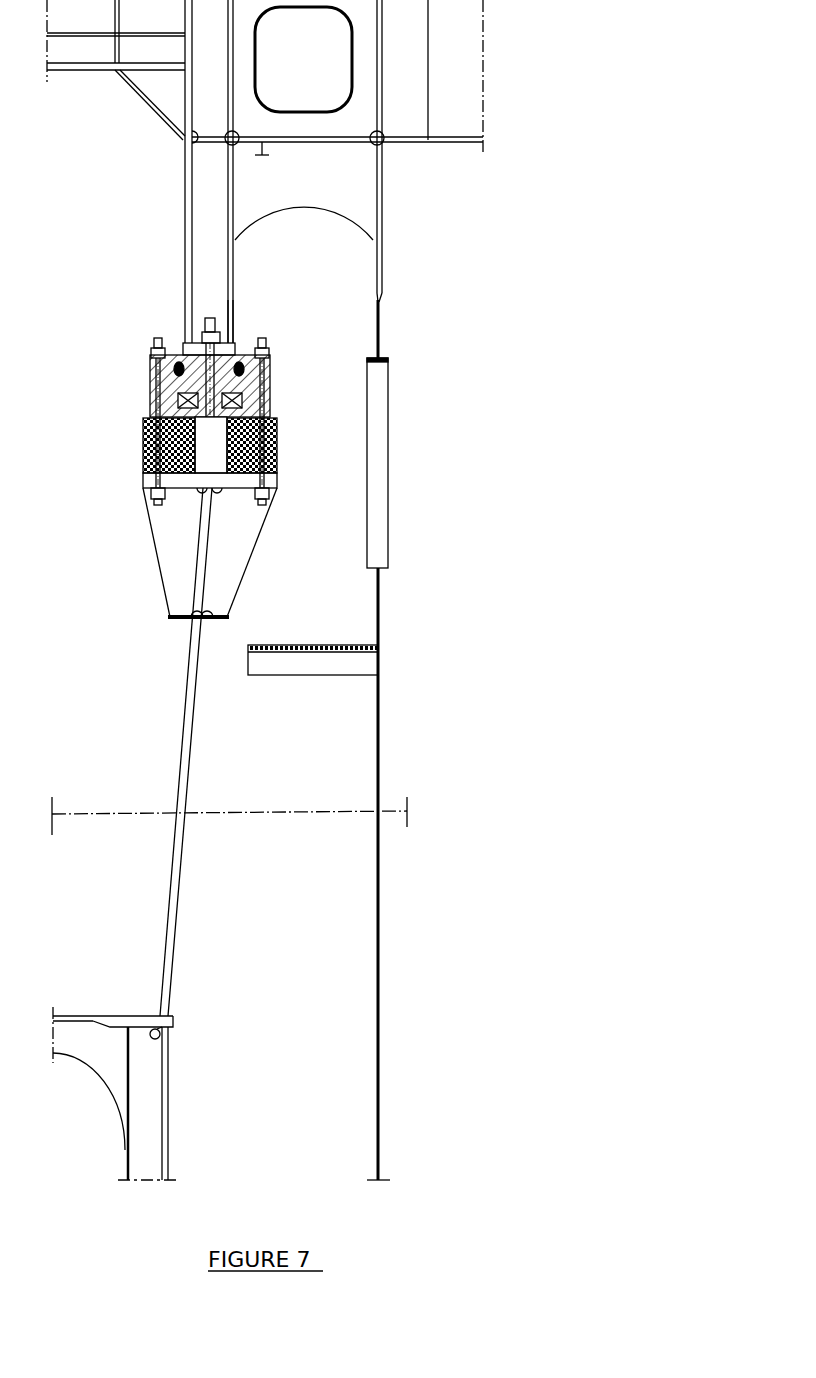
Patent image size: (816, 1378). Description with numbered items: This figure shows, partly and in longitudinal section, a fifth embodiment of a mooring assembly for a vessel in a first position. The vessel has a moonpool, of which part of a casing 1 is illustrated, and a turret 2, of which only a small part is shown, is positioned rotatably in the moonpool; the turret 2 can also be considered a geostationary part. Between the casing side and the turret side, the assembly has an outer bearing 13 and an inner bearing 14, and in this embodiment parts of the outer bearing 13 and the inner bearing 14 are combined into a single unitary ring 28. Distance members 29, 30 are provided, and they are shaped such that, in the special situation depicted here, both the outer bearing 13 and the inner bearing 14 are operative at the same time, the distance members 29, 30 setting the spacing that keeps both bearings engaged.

The casing 1 is at (180, 932).
The turret 2 is at (384, 932).
The outer bearing 13 is at (160, 409).
The inner bearing 14 is at (281, 315).
The single unitary ring 28 is at (142, 363).
The distance member 29 is at (122, 445).
The distance member 30 is at (281, 445).